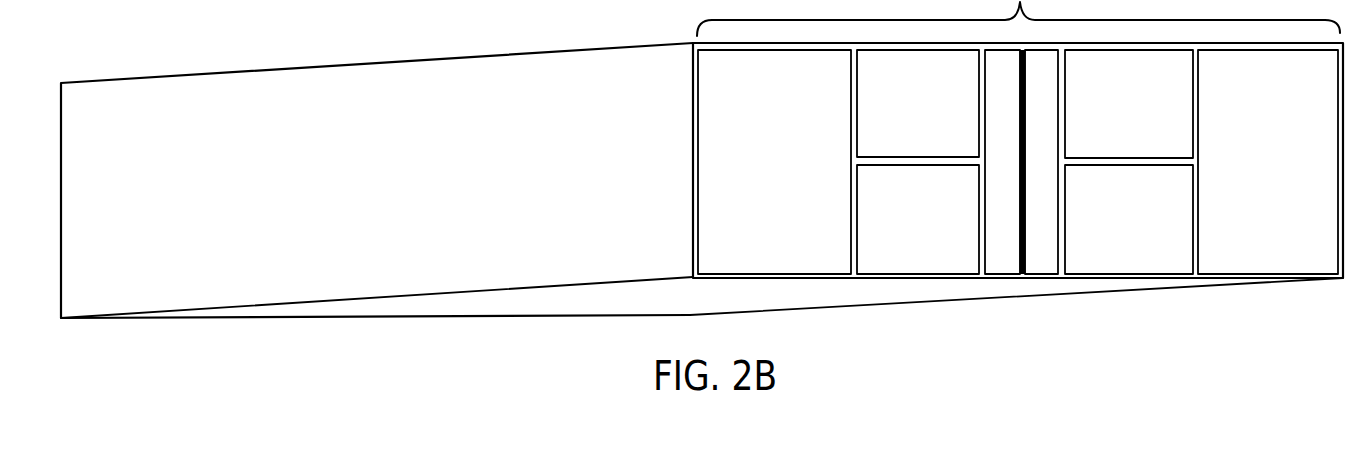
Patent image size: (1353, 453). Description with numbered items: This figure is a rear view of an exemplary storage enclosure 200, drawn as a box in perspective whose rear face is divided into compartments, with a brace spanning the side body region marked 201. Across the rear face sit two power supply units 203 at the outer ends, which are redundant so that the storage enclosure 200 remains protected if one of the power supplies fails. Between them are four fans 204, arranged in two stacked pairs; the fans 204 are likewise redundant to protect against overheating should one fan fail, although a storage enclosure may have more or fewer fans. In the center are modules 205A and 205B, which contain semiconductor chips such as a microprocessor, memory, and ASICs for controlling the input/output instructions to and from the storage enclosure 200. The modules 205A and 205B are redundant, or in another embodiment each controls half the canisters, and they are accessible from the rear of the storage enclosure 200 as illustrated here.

The storage enclosure 200 is at (1252, 358).
The chassis body / enclosure 201 is at (59, 328).
The power supply unit 203 is at (775, 247).
The fan 204 is at (912, 248).
The module A 205A is at (1003, 252).
The module B 205B is at (1043, 252).